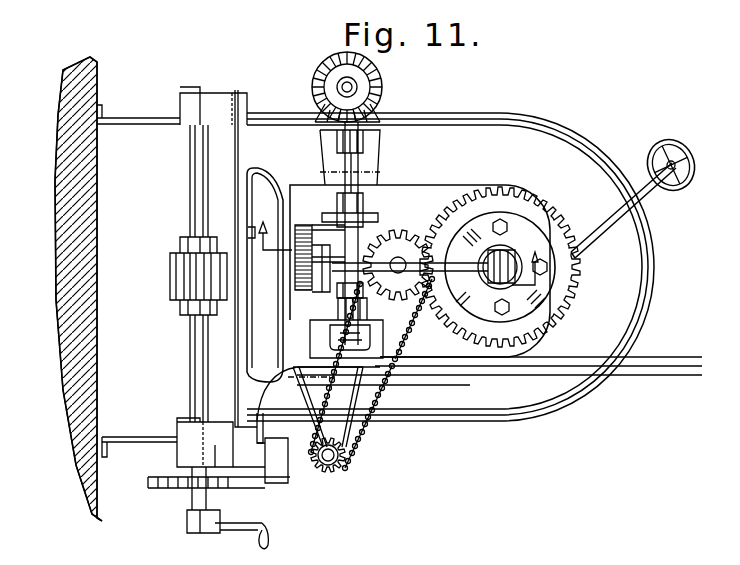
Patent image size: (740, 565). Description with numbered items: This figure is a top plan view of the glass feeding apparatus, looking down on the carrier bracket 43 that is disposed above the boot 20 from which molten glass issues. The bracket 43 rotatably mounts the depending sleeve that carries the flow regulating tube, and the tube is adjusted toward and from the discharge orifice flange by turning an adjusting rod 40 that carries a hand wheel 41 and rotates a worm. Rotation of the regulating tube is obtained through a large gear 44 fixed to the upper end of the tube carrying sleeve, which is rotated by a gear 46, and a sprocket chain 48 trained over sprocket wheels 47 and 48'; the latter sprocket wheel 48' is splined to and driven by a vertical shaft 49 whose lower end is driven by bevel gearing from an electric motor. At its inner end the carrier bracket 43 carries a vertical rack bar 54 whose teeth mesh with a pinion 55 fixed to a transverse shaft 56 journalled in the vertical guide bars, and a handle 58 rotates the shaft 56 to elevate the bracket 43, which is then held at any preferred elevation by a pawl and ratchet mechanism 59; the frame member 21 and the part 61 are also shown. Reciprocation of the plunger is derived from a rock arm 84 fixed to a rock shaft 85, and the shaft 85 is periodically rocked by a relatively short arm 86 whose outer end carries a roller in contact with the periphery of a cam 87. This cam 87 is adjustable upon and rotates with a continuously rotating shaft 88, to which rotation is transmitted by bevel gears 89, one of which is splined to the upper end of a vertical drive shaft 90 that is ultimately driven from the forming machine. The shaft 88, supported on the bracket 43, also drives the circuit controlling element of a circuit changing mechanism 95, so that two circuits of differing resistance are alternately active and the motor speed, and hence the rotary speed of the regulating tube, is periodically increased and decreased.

The boot 20 is at (640, 293).
The supporting frame bracket 21 is at (164, 118).
The adjusting rod 40 is at (597, 241).
The hand wheel 41 is at (680, 190).
The carrier bracket 43 is at (450, 183).
The gear 44 is at (572, 291).
The gear 46 is at (398, 230).
The sprocket wheel 47 is at (408, 318).
The sprocket chain 48 is at (366, 376).
The sprocket wheel 48' is at (351, 462).
The vertical shaft 49 is at (326, 466).
The rack bar 54 is at (269, 275).
The pinion 55 is at (178, 266).
The transverse shaft 56 is at (198, 360).
The handle 58 is at (247, 530).
The pawl and ratchet mechanism 59 is at (243, 483).
The hub bolt 61 is at (516, 286).
The rock arm 84 is at (478, 263).
The rock shaft 85 is at (294, 300).
The short arm 86 is at (315, 225).
The cam 87 is at (366, 219).
The continuously rotating shaft 88 is at (362, 171).
The bevel gears 89 is at (380, 84).
The vertical drive shaft 90 is at (337, 83).
The circuit changing mechanism 95 is at (383, 343).